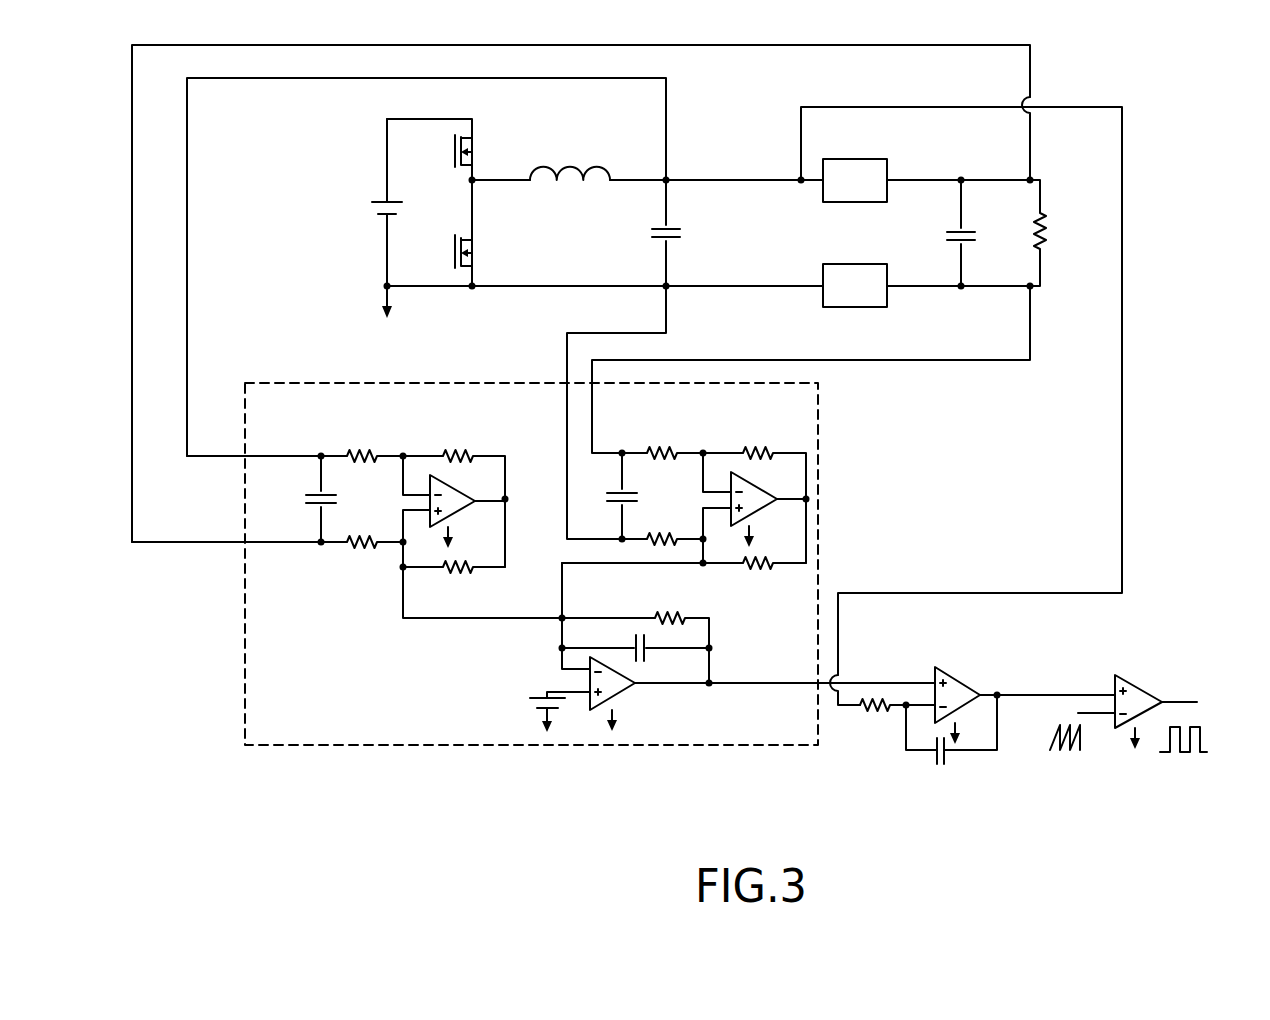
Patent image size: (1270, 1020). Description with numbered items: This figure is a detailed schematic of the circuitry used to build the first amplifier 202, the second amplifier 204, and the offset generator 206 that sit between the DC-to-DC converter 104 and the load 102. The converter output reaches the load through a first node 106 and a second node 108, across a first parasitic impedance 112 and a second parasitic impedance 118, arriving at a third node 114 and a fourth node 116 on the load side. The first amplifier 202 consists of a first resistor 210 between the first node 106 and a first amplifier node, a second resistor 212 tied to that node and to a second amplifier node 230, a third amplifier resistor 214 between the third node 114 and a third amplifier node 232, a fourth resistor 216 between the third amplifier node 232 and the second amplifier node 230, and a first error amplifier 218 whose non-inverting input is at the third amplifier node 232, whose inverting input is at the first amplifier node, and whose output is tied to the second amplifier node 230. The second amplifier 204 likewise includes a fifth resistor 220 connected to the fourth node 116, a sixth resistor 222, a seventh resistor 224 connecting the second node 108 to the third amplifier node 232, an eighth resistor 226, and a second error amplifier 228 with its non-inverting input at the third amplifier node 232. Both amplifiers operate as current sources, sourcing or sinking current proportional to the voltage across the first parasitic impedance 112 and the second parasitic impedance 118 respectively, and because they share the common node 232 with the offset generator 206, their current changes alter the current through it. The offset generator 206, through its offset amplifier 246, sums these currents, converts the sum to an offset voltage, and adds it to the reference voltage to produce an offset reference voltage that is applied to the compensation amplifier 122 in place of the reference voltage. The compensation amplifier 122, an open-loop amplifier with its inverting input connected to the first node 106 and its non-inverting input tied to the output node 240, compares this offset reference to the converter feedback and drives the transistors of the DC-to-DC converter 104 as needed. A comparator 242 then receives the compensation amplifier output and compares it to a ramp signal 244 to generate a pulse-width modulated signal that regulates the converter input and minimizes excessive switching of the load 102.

The load 102 is at (1048, 226).
The DC-to-DC converter 104 is at (325, 124).
The first node 106 is at (662, 178).
The second node 108 is at (666, 290).
The first parasitic impedance 112 is at (887, 165).
The third node 114 is at (1032, 160).
The fourth node 116 is at (1032, 305).
The second parasitic impedance 118 is at (887, 297).
The compensation amplifier 122 is at (962, 680).
The first amplifier 202 is at (363, 513).
The second amplifier 204 is at (742, 521).
The offset generator 206 is at (470, 722).
The first resistor 210 is at (376, 453).
The second resistor 212 is at (470, 453).
The third amplifier resistor 214 is at (378, 545).
The ground resistor 216 is at (473, 570).
The first error amplifier 218 is at (470, 512).
The fifth resistor 220 is at (676, 450).
The sixth resistor 222 is at (772, 450).
The seventh resistor 224 is at (676, 535).
The eighth resistor 226 is at (778, 568).
The second error amplifier 228 is at (770, 512).
The second amplifier node 230 is at (684, 615).
The third amplifier node 232 is at (558, 622).
The output node 240 is at (709, 686).
The comparator 242 is at (1138, 678).
The ramp signal 244 is at (1082, 748).
The offset amplifier 246 is at (635, 688).